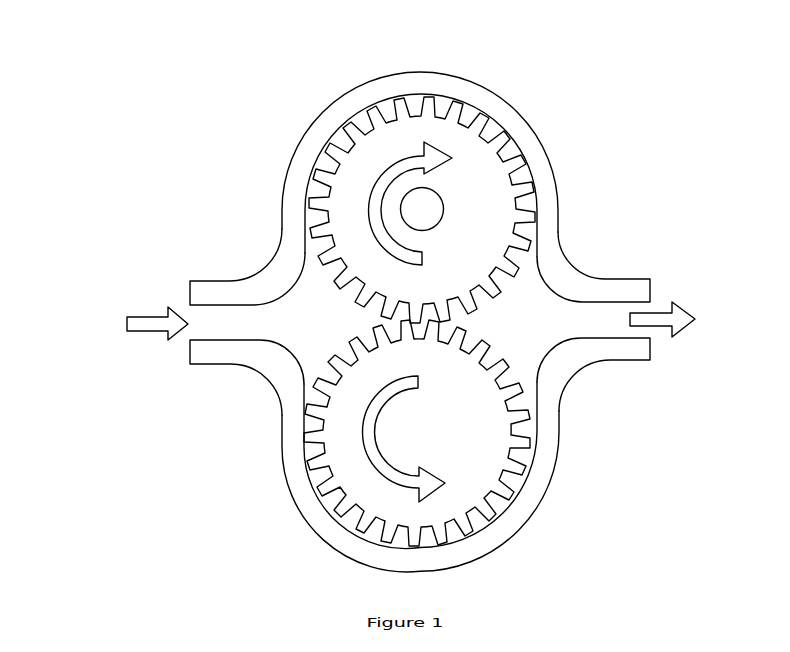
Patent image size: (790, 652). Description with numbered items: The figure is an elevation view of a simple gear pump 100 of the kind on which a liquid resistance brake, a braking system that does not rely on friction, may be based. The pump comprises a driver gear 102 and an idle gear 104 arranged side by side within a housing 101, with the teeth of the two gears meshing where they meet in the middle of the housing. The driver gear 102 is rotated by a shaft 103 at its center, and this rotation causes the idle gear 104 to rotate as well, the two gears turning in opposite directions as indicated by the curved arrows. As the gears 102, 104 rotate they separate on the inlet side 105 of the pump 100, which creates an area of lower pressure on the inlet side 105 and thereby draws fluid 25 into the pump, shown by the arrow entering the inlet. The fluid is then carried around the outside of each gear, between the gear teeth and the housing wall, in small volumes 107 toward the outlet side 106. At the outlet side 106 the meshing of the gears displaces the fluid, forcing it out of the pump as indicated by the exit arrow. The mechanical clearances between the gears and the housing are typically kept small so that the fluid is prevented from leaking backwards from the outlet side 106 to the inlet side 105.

The gear pump 100 is at (496, 40).
The housing 101 is at (487, 102).
The driver gear 102 is at (435, 210).
The shaft 103 is at (433, 207).
The idle gear 104 is at (505, 421).
The inlet side 105 is at (226, 317).
The outlet side 106 is at (626, 307).
The small volumes 107 is at (323, 172).
The fluid 25 is at (147, 323).